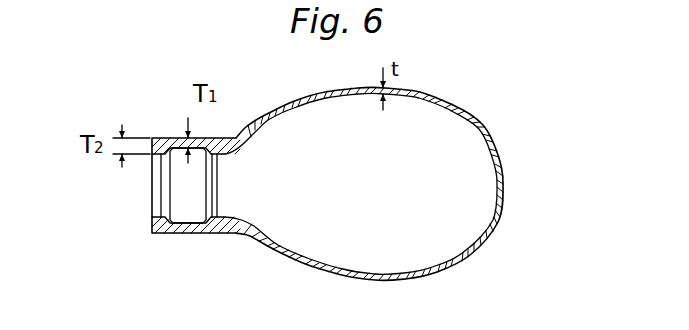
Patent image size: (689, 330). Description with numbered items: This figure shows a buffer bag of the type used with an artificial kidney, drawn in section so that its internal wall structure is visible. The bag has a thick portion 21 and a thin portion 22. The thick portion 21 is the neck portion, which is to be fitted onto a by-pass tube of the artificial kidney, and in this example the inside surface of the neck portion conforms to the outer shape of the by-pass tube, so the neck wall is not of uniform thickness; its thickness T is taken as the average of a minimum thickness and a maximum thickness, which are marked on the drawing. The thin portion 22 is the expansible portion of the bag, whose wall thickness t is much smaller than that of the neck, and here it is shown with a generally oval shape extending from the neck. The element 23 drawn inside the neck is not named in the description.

The thick portion 21 is at (160, 233).
The thin portion 22 is at (492, 140).
The sleeve insert 23 is at (187, 223).